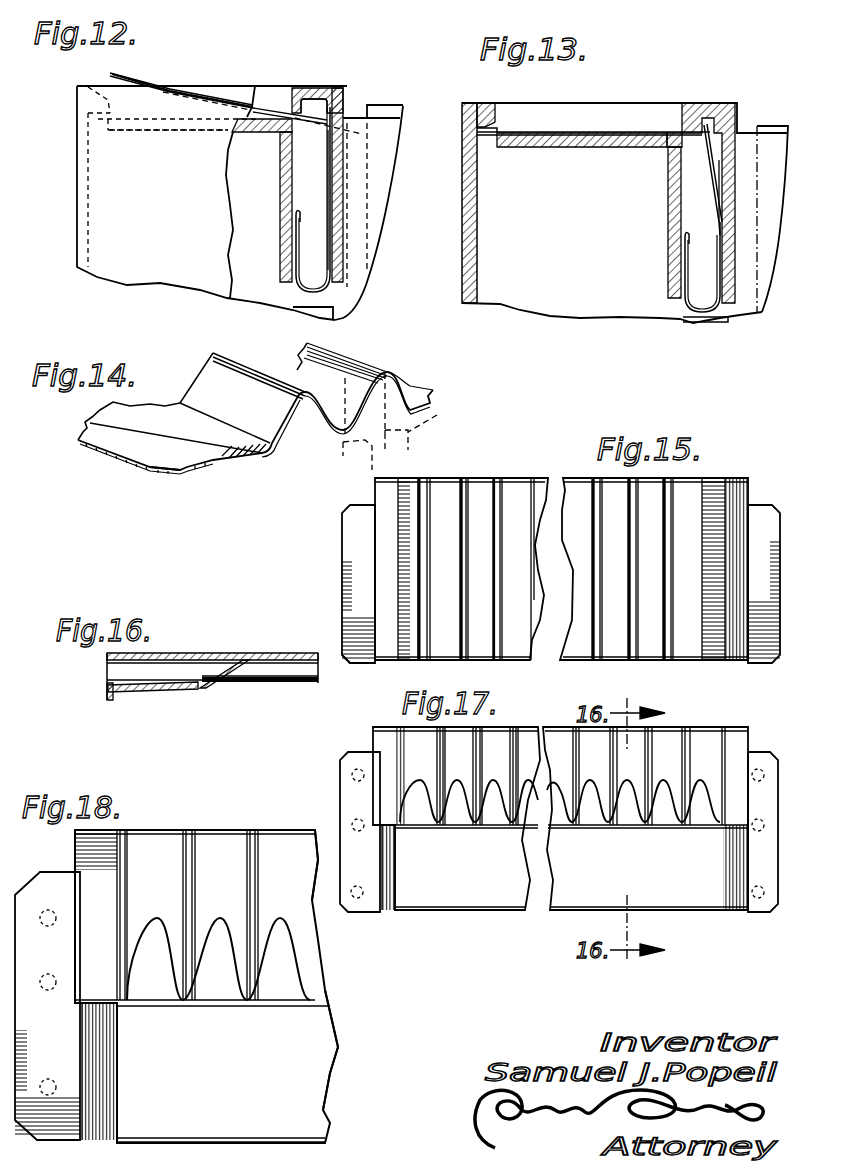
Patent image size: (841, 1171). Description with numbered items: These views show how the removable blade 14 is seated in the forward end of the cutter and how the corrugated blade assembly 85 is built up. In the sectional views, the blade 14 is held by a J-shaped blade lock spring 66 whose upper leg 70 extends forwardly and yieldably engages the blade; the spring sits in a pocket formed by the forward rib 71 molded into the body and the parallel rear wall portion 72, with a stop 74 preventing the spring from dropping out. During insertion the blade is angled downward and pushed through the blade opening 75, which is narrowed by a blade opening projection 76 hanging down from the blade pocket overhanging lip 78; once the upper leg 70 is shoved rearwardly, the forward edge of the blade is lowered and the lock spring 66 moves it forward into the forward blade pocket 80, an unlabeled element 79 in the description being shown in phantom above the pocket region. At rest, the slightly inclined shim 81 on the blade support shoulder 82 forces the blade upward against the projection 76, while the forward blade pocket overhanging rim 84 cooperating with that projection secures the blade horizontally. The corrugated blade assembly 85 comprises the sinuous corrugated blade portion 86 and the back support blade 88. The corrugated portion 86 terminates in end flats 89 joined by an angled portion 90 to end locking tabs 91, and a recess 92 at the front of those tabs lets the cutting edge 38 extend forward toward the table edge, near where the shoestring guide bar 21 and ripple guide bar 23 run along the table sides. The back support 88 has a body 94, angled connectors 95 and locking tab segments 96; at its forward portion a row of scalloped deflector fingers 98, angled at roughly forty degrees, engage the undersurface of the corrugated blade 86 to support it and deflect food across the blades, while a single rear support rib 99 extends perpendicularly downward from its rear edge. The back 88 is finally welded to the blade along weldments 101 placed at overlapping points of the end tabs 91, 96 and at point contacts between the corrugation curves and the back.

In FIG. 12, the removable blade 14 is at (227, 102).
In FIG. 13, the removable blade 14 is at (633, 130).
In FIG. 14, the shoestring guide bar 21 is at (340, 460).
In FIG. 14, the ripple guide bar 23 is at (436, 415).
In FIG. 15, the cutting edge 38 is at (518, 478).
In FIG. 18, the cutting edge 38 is at (263, 830).
In FIG. 12, the blade lock spring 66 is at (338, 184).
In FIG. 13, the blade lock spring 66 is at (719, 162).
In FIG. 12, the upper leg 70 is at (340, 135).
In FIG. 12, the forward rib 71 is at (282, 193).
In FIG. 13, the forward rib 71 is at (668, 226).
In FIG. 12, the rear wall portion 72 is at (338, 223).
In FIG. 13, the rear wall portion 72 is at (728, 240).
In FIG. 12, the stop 74 is at (342, 319).
In FIG. 13, the stop 74 is at (712, 323).
In FIG. 12, the blade opening 75 is at (288, 106).
In FIG. 12, the blade opening projection 76 is at (303, 92).
In FIG. 13, the blade opening projection 76 is at (692, 128).
In FIG. 12, the blade pocket overhanging lip 78 is at (334, 92).
In FIG. 12, the cutting blade 79 is at (112, 75).
In FIG. 12, the forward blade pocket 80 is at (96, 122).
In FIG. 13, the forward blade pocket 80 is at (497, 128).
In FIG. 12, the inclined shim 81 is at (265, 133).
In FIG. 13, the inclined shim 81 is at (660, 150).
In FIG. 12, the blade support shoulder 82 is at (163, 130).
In FIG. 13, the blade support shoulder 82 is at (550, 148).
In FIG. 13, the forward blade pocket overhanging rim 84 is at (483, 116).
In FIG. 14, the corrugated blade assembly 85 is at (413, 433).
In FIG. 14, the corrugated blade portion 86 is at (360, 362).
In FIG. 15, the corrugated blade portion 86 is at (593, 442).
In FIG. 16, the corrugated blade portion 86 is at (205, 653).
In FIG. 17, the corrugated blade portion 86 is at (512, 737).
In FIG. 18, the corrugated blade portion 86 is at (200, 850).
In FIG. 16, the back support blade 88 is at (166, 692).
In FIG. 18, the back support blade 88 is at (317, 1087).
In FIG. 14, the end flats 89 is at (266, 455).
In FIG. 15, the end flats 89 is at (410, 660).
In FIG. 14, the angled portion 90 is at (236, 465).
In FIG. 15, the angled portion 90 is at (388, 660).
In FIG. 14, the end locking tabs 91 is at (145, 455).
In FIG. 15, the end locking tabs 91 is at (356, 663).
In FIG. 14, the recess 92 is at (200, 475).
In FIG. 15, the recess 92 is at (352, 497).
In FIG. 18, the recess 92 is at (53, 866).
In FIG. 17, the body 94 is at (571, 885).
In FIG. 18, the body 94 is at (320, 1063).
In FIG. 17, the angled connectors 95 is at (730, 890).
In FIG. 18, the angled connectors 95 is at (107, 1078).
In FIG. 17, the locking tab segments 96 is at (748, 902).
In FIG. 18, the locking tab segments 96 is at (73, 947).
In FIG. 16, the scalloped deflector fingers 98 is at (228, 690).
In FIG. 17, the scalloped deflector fingers 98 is at (494, 826).
In FIG. 18, the scalloped deflector fingers 98 is at (213, 980).
In FIG. 17, the rear support rib 99 is at (500, 912).
In FIG. 18, the rear support rib 99 is at (227, 1140).
In FIG. 17, the weldments 101 is at (757, 757).
In FIG. 18, the weldments 101 is at (50, 1080).